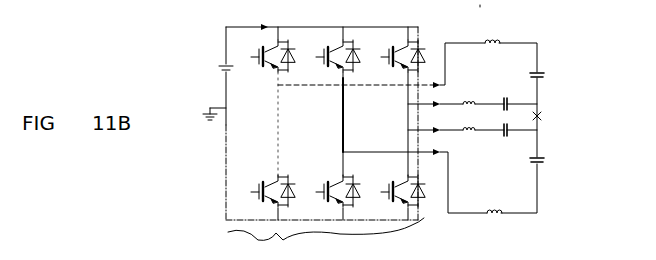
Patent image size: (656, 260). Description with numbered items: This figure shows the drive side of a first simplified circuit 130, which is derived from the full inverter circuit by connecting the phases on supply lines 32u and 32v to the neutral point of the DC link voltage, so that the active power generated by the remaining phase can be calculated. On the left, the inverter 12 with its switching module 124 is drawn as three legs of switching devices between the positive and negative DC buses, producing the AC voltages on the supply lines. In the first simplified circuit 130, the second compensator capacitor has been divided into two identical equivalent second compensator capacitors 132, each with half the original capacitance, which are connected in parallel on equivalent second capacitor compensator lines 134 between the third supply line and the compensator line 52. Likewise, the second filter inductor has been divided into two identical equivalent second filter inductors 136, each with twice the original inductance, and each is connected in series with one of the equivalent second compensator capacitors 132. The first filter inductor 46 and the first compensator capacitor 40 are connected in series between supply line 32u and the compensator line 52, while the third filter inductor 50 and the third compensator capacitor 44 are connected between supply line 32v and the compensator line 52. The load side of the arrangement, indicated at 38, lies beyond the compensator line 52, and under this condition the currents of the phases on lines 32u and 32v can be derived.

The inverter 12 is at (283, 240).
The inverter circuit 124 is at (349, 14).
The first simplified circuit 130 is at (615, 22).
The equivalent second compensator capacitor 132 is at (512, 97).
The equivalent second capacitor compensator line 134 is at (418, 103).
The equivalent second filter inductor 136 is at (465, 100).
The supply line 32u is at (456, 44).
The supply line 32v is at (404, 96).
The motor 38 is at (479, 4).
The first compensator capacitor 40 is at (542, 72).
The third compensator capacitor 44 is at (540, 166).
The first filter inductor 46 is at (498, 40).
The third filter inductor 50 is at (492, 217).
The compensator line 52 is at (538, 119).